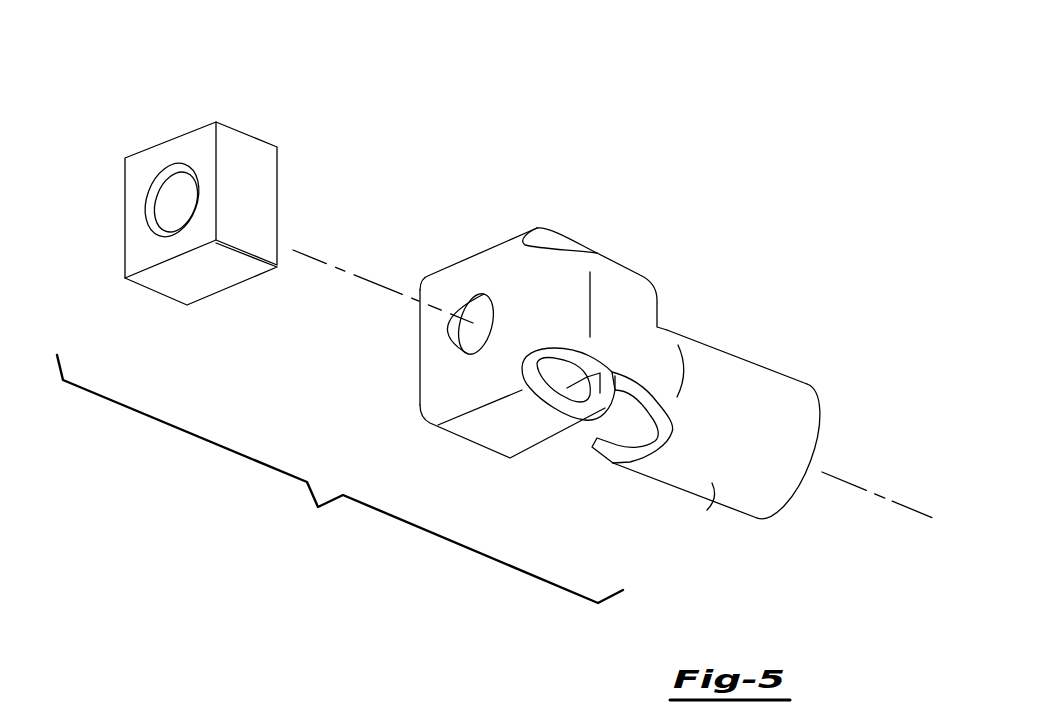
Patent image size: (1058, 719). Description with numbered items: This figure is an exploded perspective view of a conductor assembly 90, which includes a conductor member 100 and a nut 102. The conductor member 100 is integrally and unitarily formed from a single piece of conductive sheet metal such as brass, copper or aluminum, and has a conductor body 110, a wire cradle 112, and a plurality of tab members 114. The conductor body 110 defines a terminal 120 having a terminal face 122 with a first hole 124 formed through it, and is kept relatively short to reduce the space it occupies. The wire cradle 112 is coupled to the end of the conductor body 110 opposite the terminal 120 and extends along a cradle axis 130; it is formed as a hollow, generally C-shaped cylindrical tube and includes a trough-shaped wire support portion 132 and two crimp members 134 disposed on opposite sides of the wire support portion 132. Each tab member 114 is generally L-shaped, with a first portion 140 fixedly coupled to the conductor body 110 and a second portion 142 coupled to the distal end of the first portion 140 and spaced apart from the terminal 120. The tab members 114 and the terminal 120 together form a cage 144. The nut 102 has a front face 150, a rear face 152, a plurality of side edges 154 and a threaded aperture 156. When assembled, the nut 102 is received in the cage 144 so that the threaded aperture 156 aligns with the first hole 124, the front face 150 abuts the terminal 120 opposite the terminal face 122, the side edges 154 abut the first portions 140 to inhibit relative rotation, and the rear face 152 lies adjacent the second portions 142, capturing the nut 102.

The conductor assembly 90 is at (340, 479).
The conductor member 100 is at (613, 378).
The nut 102 is at (174, 186).
The conductor body 110 is at (543, 346).
The wire cradle 112 is at (739, 439).
The tab members 114 is at (557, 230).
The terminal 120 is at (468, 267).
The terminal face 122 is at (463, 377).
The first hole 124 is at (467, 317).
The cradle axis 130 is at (840, 482).
The wire support portion 132 is at (713, 360).
The crimp member 134 is at (712, 483).
The first portion 140 is at (460, 433).
The second portion 142 is at (610, 388).
The cage 144 is at (557, 370).
The front face 150 is at (147, 167).
The rear face 152 is at (250, 278).
The side edges 154 is at (248, 163).
The threaded aperture 156 is at (163, 210).